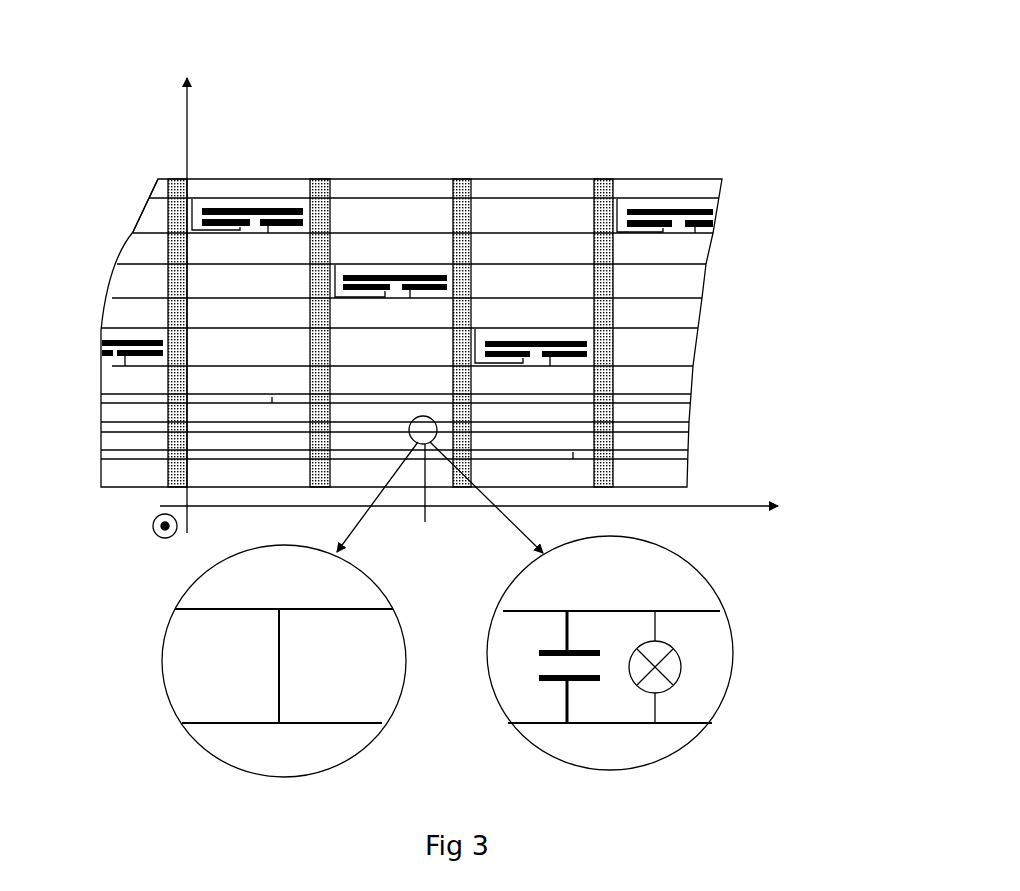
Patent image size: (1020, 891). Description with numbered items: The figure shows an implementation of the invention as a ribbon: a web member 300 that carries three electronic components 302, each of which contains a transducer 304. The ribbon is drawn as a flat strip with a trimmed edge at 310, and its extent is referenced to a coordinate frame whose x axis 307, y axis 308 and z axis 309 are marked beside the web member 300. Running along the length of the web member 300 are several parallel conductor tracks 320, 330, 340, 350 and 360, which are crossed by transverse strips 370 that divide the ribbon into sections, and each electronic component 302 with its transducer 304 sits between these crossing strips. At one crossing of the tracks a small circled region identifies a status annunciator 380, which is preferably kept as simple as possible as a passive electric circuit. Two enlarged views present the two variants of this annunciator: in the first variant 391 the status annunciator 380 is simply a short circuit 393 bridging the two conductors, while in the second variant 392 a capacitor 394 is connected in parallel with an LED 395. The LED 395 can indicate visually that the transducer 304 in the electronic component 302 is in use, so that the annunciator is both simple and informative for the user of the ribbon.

The web member 300 is at (700, 340).
The electronic component 302 is at (533, 177).
The transducer 304 is at (513, 334).
The x axis 307 is at (787, 532).
The y axis 308 is at (160, 62).
The z axis 309 is at (122, 540).
The panel edge 310 is at (158, 193).
The first row line pair 320 is at (103, 302).
The second row line pair 330 is at (108, 360).
The third row line pair 340 is at (133, 398).
The fourth row line pair 350 is at (145, 422).
The fifth row line pair 360 is at (138, 452).
The column strips 370 is at (178, 175).
The status annunciator 380 is at (558, 467).
The first variant of status annunciator 391 is at (244, 668).
The second variant of status annunciator 392 is at (643, 670).
The short circuit 393 is at (260, 728).
The capacitor 394 is at (530, 692).
The LED 395 is at (697, 655).